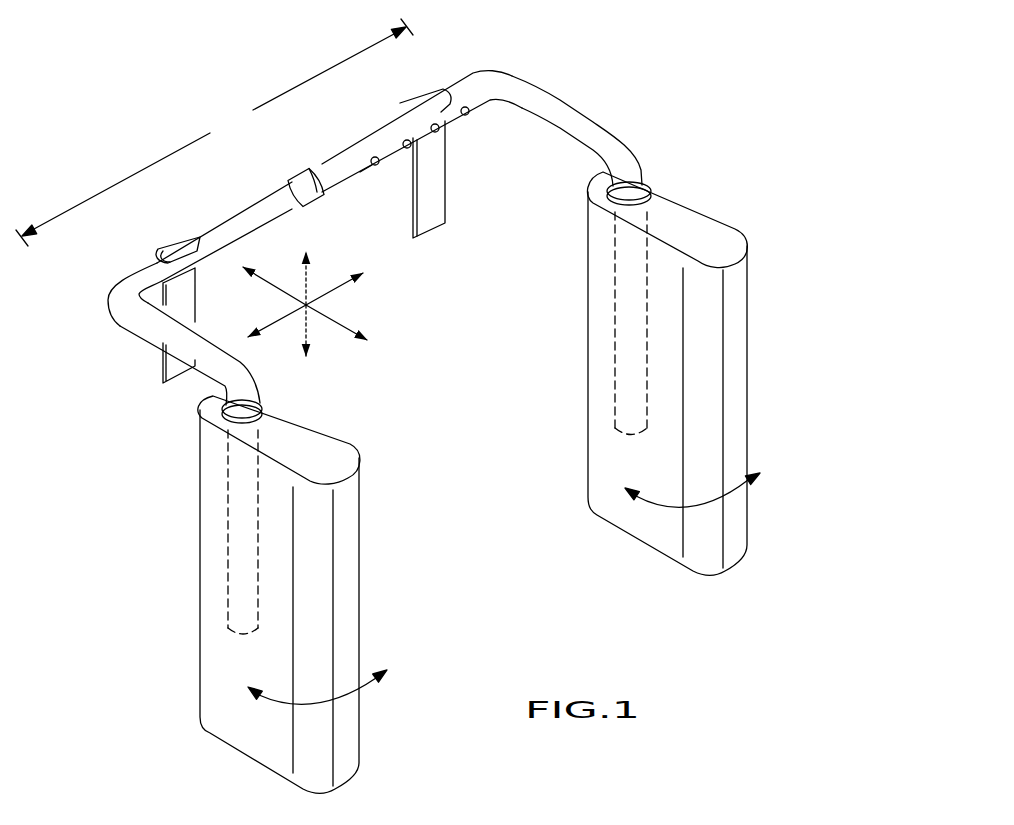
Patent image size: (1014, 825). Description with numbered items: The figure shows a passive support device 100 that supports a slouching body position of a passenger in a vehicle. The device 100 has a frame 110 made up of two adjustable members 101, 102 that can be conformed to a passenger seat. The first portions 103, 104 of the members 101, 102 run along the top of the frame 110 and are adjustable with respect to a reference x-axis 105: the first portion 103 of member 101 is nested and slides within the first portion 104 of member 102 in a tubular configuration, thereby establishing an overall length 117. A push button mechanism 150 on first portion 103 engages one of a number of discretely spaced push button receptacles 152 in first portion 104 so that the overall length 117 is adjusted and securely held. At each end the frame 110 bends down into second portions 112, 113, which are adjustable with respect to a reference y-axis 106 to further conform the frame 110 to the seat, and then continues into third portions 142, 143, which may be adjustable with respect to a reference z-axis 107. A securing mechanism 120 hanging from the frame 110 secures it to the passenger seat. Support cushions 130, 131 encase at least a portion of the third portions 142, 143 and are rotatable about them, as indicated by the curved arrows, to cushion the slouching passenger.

The support device 100 is at (136, 251).
The adjustable member 101 is at (247, 212).
The adjustable member 102 is at (371, 137).
The first portion 103 is at (203, 222).
The first portion 104 is at (372, 175).
The reference x-axis 105 is at (328, 291).
The reference y-axis 106 is at (348, 320).
The reference z-axis 107 is at (302, 340).
The frame 110 is at (101, 285).
The second portion 112 is at (609, 118).
The second portion 113 is at (146, 344).
The overall length 117 is at (214, 132).
The securing mechanism 120 is at (439, 188).
The support cushion 130 is at (602, 402).
The support cushion 131 is at (345, 522).
The third portion 142 is at (616, 298).
The third portion 143 is at (240, 515).
The push button mechanism 150 is at (370, 158).
The push button receptacles 152 is at (458, 105).